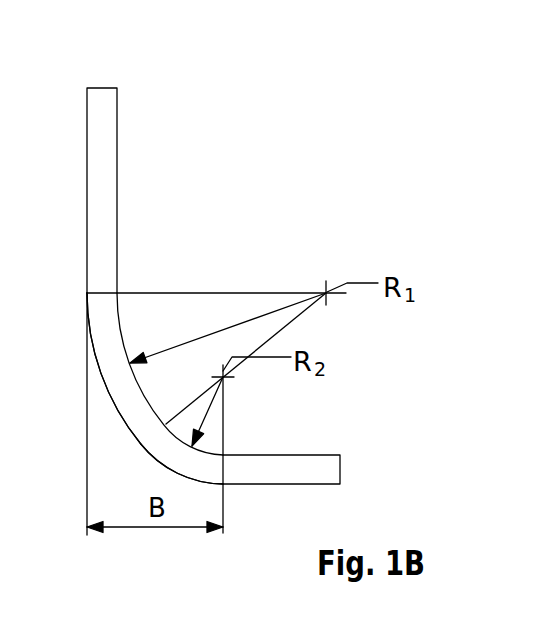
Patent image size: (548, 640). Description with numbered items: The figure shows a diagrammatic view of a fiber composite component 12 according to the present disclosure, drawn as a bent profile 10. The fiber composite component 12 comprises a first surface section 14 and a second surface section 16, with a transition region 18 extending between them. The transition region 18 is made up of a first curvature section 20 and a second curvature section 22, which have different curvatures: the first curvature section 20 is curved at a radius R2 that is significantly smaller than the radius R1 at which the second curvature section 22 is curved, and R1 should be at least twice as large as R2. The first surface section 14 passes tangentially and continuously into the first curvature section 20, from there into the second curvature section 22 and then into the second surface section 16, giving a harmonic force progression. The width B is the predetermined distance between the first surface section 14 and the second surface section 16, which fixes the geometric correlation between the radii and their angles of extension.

The bent bar profile 10 is at (200, 282).
The fiber composite component 12 is at (252, 230).
The first surface section 14 is at (323, 467).
The second surface section 16 is at (107, 217).
The transition region 18 is at (142, 458).
The first curvature section 20 is at (197, 465).
The second curvature section 22 is at (127, 403).